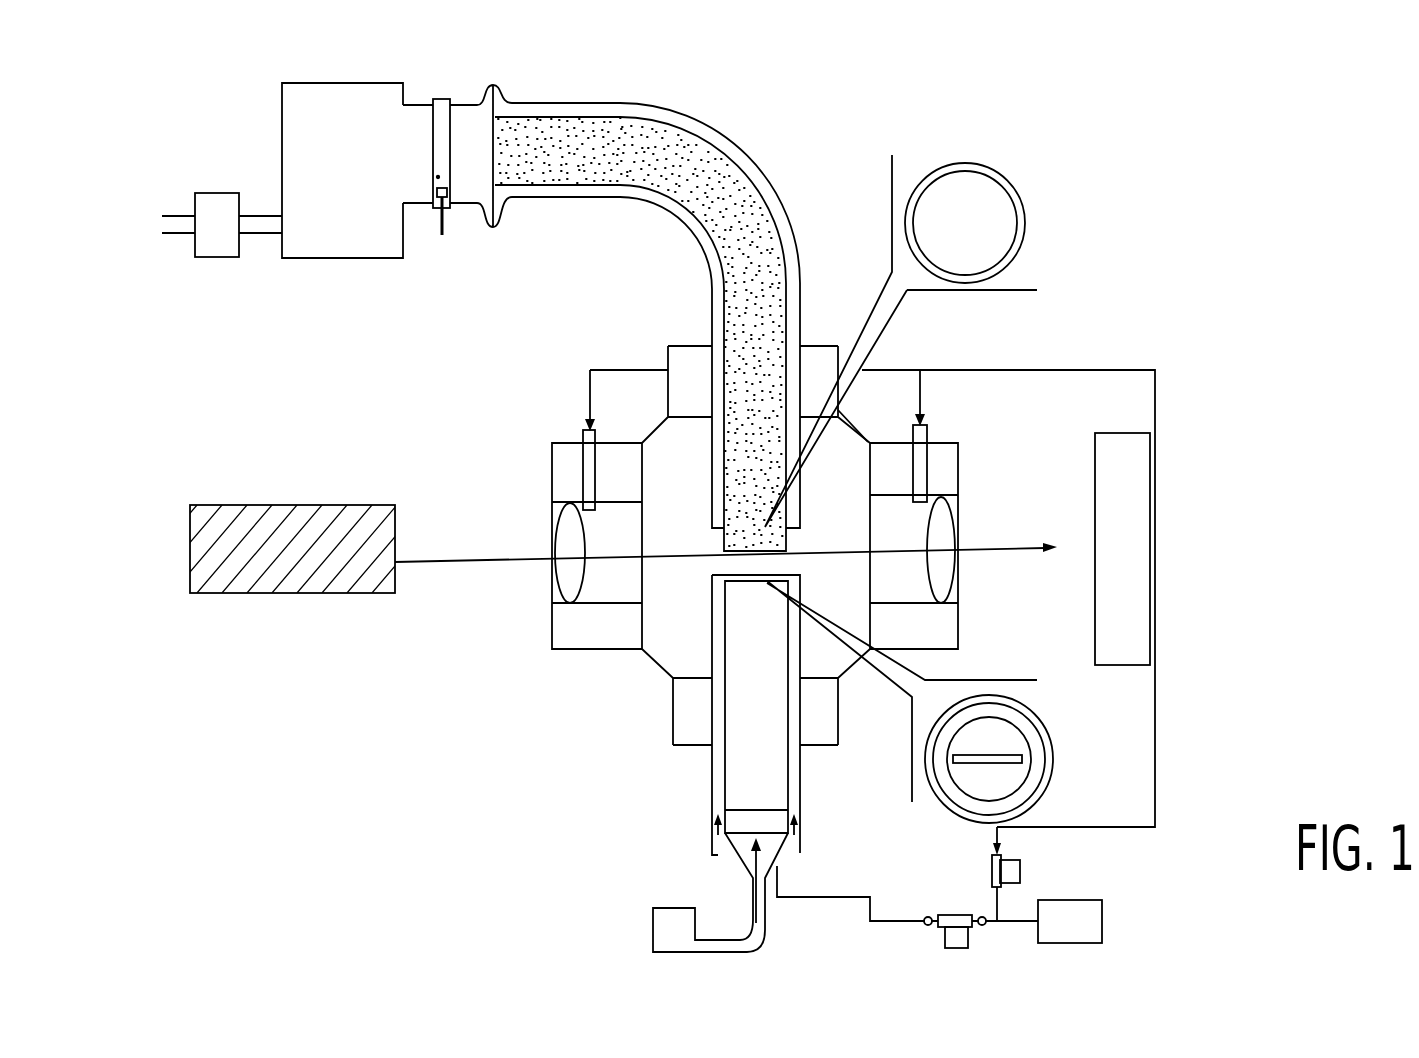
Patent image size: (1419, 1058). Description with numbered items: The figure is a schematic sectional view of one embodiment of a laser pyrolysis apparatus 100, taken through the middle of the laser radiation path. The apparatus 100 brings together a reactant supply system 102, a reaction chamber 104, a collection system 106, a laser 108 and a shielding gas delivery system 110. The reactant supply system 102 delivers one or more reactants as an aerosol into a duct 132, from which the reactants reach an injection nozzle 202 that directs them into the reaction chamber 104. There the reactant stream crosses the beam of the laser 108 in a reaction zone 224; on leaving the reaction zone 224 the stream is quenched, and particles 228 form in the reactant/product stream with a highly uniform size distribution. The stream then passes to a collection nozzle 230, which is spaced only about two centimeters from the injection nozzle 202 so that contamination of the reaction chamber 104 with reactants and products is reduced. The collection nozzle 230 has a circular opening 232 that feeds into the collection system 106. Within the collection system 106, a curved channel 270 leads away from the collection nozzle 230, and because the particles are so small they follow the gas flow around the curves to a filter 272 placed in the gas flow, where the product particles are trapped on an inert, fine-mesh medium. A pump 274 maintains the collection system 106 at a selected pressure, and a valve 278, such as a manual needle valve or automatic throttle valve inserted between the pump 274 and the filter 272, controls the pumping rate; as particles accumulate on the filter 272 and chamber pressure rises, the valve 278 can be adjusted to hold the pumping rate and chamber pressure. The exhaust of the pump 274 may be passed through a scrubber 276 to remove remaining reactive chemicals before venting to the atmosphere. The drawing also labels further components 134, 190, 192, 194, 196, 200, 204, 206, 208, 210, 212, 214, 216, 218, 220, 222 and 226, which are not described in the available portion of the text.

The pyrolysis apparatus 100 is at (1050, 640).
The reactant supply system 102 is at (636, 901).
The reaction chamber 104 is at (648, 667).
The collection system 106 is at (669, 221).
The laser 108 is at (243, 505).
The shielding gas delivery system 110 is at (1123, 853).
The duct 132 is at (768, 862).
The nozzle body 134 is at (750, 724).
The gas source 190 is at (1063, 900).
The shielding gas flow 192 is at (717, 833).
The shielding gas passage 194 is at (712, 778).
The valve 196 is at (952, 915).
The exhaust duct 200 is at (833, 652).
The injection nozzle 202 is at (727, 580).
The pump 204 is at (1032, 780).
The pump slot 206 is at (1017, 757).
The left window housing 208 is at (553, 448).
The right window housing 210 is at (955, 452).
The entrance window 212 is at (553, 575).
The exit window 214 is at (945, 510).
The sensor 216 is at (583, 432).
The sensor 218 is at (920, 433).
The valve 220 is at (1003, 858).
The laser beam 222 is at (487, 560).
The reaction zone 224 is at (590, 370).
The beam dump 226 is at (1113, 446).
The particles 228 is at (642, 440).
The collection nozzle 230 is at (988, 290).
The circular opening 232 is at (1003, 220).
The curved channel 270 is at (628, 197).
The filter 272 is at (492, 207).
The pump 274 is at (318, 256).
The scrubber 276 is at (213, 258).
The valve 278 is at (438, 177).